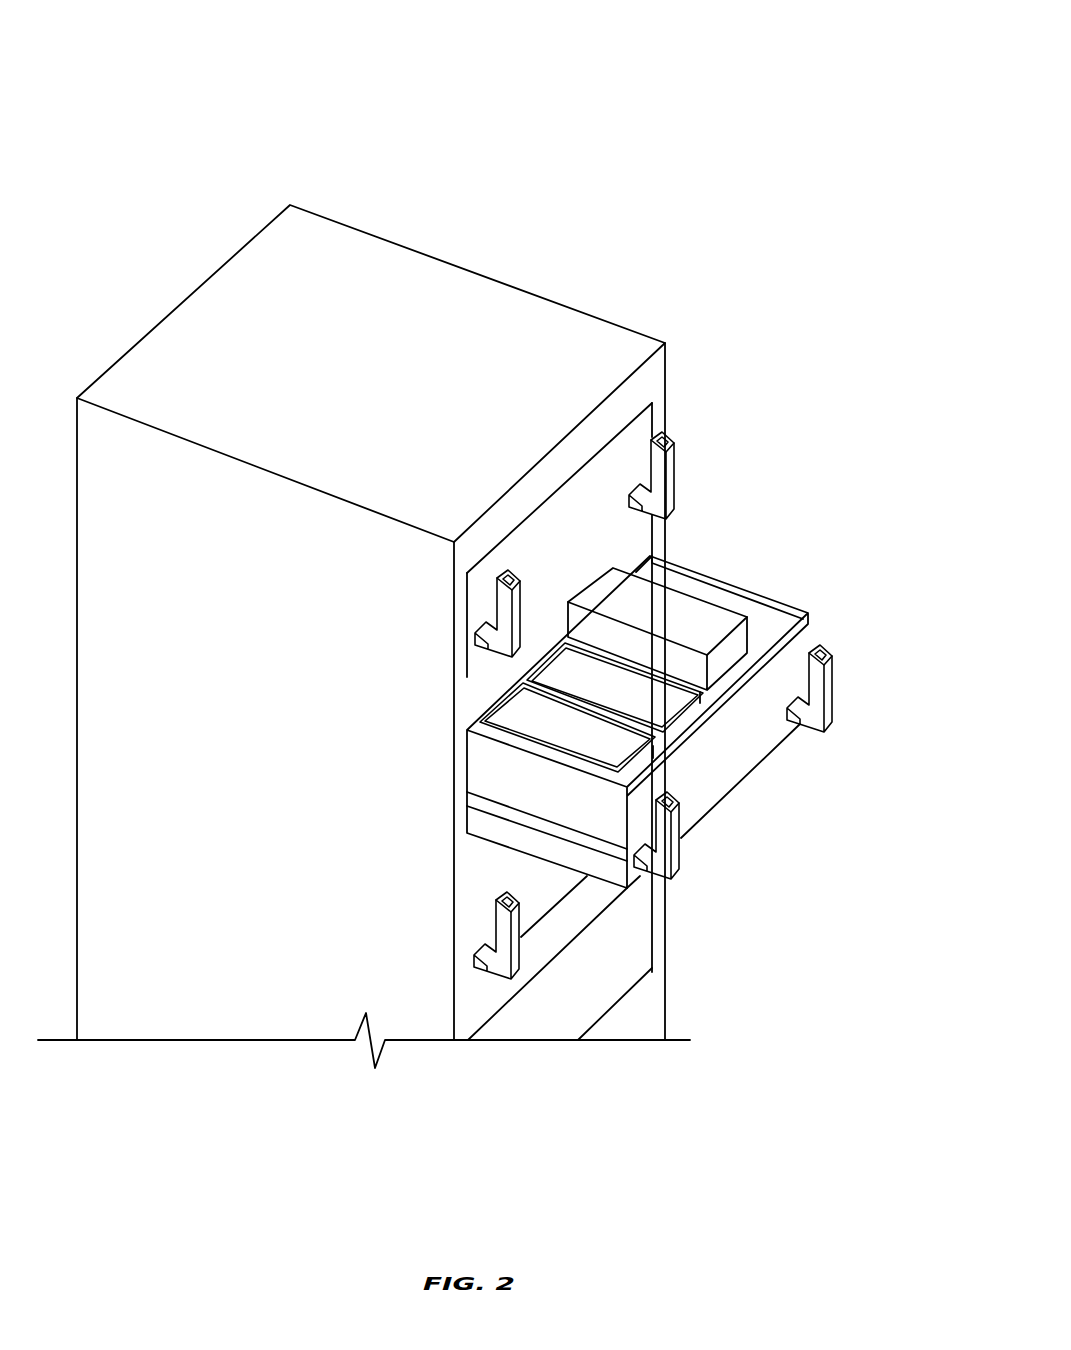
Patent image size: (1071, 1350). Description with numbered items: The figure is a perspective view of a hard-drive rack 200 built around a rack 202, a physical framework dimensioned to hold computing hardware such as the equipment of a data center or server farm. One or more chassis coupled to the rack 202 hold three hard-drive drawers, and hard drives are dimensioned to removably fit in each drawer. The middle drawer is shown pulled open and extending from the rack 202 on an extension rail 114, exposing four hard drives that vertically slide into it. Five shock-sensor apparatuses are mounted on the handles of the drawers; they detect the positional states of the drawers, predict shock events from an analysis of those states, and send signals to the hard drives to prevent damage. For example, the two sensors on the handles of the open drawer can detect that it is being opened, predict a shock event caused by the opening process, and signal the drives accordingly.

The hard-drive rack 200 is at (100, 108).
The rack 202 is at (428, 257).
The extension rail 114 is at (473, 803).